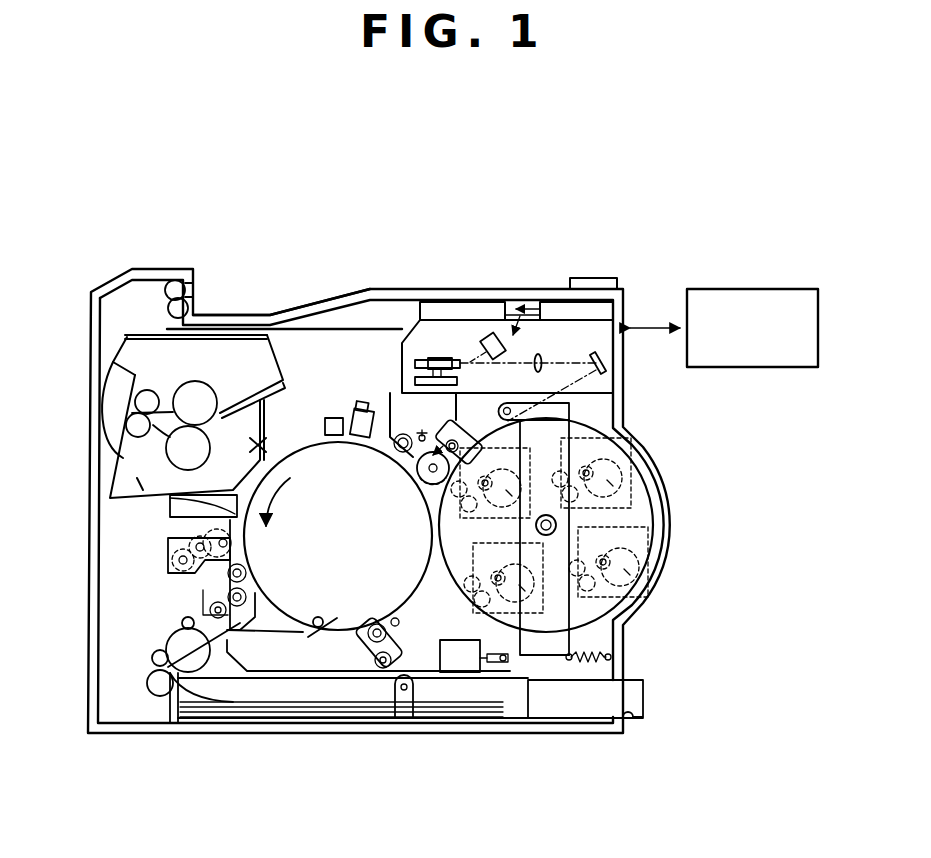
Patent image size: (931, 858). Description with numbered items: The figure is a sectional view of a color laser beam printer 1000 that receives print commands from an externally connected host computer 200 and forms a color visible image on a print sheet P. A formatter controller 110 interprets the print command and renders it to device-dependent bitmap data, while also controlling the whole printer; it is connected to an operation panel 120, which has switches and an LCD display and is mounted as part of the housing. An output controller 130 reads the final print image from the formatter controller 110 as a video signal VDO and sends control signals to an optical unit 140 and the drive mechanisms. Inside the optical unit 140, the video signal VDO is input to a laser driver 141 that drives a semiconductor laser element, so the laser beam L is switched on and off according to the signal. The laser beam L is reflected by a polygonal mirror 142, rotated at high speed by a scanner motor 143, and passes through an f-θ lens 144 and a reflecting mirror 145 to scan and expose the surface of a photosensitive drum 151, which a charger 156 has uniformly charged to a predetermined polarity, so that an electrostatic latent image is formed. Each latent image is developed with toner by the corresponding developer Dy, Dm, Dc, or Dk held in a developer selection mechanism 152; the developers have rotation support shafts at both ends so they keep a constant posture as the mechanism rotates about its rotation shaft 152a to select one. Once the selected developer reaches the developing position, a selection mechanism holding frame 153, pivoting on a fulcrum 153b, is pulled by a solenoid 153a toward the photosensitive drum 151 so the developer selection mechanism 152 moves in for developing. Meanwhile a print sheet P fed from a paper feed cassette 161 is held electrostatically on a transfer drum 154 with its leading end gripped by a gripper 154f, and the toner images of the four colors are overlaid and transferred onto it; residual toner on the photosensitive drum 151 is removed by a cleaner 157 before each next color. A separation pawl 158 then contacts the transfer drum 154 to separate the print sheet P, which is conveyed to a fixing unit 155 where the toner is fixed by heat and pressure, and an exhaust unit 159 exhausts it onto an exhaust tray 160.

The printer 1000 is at (360, 760).
The formatter controller 110 is at (552, 302).
The operation panel 120 is at (607, 278).
The output controller 130 is at (432, 302).
The optical unit 140 is at (403, 340).
The laser driver 141 is at (485, 337).
The polygonal mirror 142 is at (452, 352).
The scanner motor 143 is at (415, 382).
The f-θ lens 144 is at (553, 351).
The reflecting mirror 145 is at (606, 363).
The laser beam L is at (594, 354).
The video signal VDO is at (522, 308).
The photosensitive drum 151 is at (428, 498).
The developer selection mechanism 152 is at (648, 485).
The rotation shaft 152a is at (556, 522).
The selection mechanism holding frame 153 is at (623, 637).
The solenoid 153a is at (445, 640).
The fulcrum 153b is at (517, 384).
The transfer drum 154 is at (327, 632).
The gripper 154f is at (319, 617).
The fixing unit 155 is at (123, 458).
The charger 156 is at (445, 433).
The cleaner 157 is at (393, 413).
The separation pawl 158 is at (280, 442).
The exhaust unit 159 is at (187, 297).
The exhaust tray 160 is at (312, 300).
The paper feed cassette 161 is at (643, 688).
The host computer 200 is at (783, 288).
The yellow developer Dy is at (530, 450).
The cyan developer Dc is at (632, 438).
The black developer Dk is at (480, 560).
The magenta developer Dm is at (677, 543).
The print sheet P is at (195, 693).